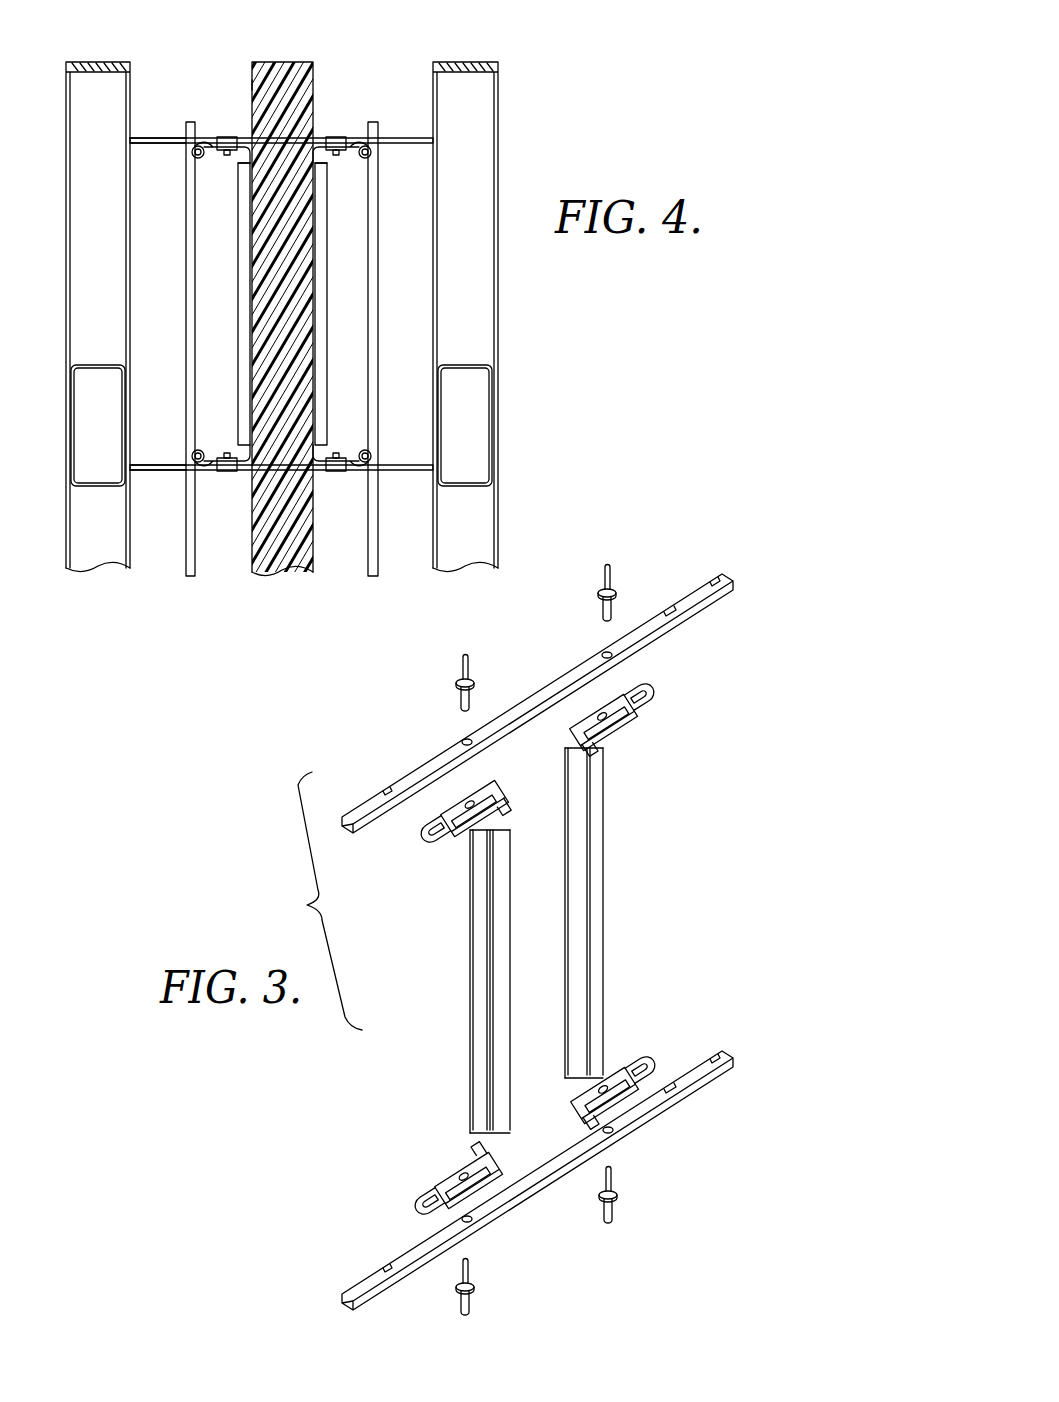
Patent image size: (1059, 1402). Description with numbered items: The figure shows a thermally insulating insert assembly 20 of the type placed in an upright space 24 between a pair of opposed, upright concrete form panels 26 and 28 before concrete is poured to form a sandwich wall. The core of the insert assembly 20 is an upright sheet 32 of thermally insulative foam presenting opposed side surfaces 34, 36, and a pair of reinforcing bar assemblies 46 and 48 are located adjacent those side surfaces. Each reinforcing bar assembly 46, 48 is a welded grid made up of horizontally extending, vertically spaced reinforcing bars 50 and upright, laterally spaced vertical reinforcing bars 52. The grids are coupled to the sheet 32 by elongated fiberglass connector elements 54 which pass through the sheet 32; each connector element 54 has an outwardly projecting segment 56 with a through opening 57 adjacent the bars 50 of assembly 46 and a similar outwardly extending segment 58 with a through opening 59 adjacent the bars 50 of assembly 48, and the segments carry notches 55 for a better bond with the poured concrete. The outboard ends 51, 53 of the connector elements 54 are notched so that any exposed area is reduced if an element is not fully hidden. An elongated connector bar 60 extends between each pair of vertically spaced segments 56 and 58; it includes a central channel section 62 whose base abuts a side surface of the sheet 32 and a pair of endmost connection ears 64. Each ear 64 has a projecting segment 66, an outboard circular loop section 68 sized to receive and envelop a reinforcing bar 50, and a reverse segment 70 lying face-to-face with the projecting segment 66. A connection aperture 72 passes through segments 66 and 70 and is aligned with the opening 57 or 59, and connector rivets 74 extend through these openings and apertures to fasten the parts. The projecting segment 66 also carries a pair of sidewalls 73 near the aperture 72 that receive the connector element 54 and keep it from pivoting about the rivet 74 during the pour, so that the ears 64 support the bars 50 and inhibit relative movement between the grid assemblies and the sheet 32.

In FIG. 4, the thermally insulating insert assembly 20 is at (210, 52).
In FIG. 4, the upright space 24 is at (170, 71).
In FIG. 4, the concrete form panel 26 is at (477, 272).
In FIG. 4, the concrete form panel 28 is at (85, 151).
In FIG. 4, the sheet 32 is at (280, 581).
In FIG. 4, the side surface 34 is at (313, 73).
In FIG. 4, the side surface 36 is at (251, 86).
In FIG. 4, the reinforcing bar assembly 46 is at (358, 581).
In FIG. 4, the reinforcing bar assembly 48 is at (165, 573).
In FIG. 4, the reinforcing bar 50 is at (205, 158).
In FIG. 3, the outboard end 51 is at (340, 813).
In FIG. 4, the vertical reinforcing bar 52 is at (191, 526).
In FIG. 3, the outboard end 53 is at (718, 573).
In FIG. 4, the connector element 54 is at (401, 136).
In FIG. 3, the connector element 54 is at (527, 681).
In FIG. 3, the notch 55 is at (670, 606).
In FIG. 4, the outwardly projecting segment 56 is at (415, 145).
In FIG. 3, the outwardly projecting segment 56 is at (727, 601).
In FIG. 3, the through opening 57 is at (604, 652).
In FIG. 4, the outwardly extending segment 58 is at (150, 138).
In FIG. 3, the outwardly extending segment 58 is at (370, 800).
In FIG. 3, the through opening 59 is at (462, 742).
In FIG. 4, the connector bar 60 is at (226, 261).
In FIG. 3, the connector bar 60 is at (615, 896).
In FIG. 4, the central channel section 62 is at (241, 330).
In FIG. 3, the central channel section 62 is at (577, 885).
In FIG. 3, the connection ear 64 is at (660, 697).
In FIG. 3, the projecting segment 66 is at (601, 746).
In FIG. 3, the circular loop section 68 is at (655, 714).
In FIG. 3, the reverse segment 70 is at (572, 720).
In FIG. 3, the connection aperture 72 is at (618, 702).
In FIG. 3, the sidewall 73 is at (628, 728).
In FIG. 3, the connector rivet 74 is at (461, 669).